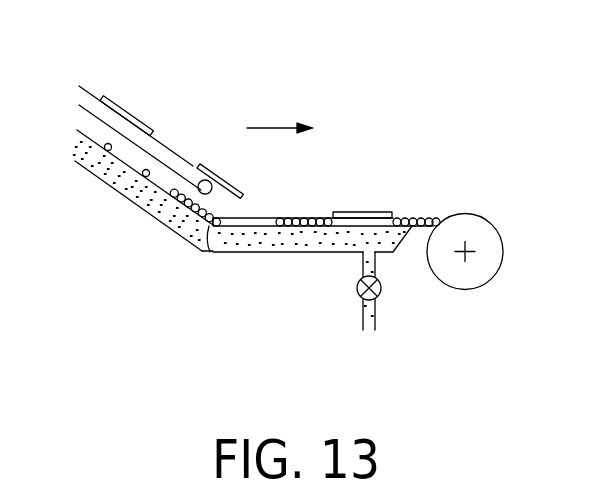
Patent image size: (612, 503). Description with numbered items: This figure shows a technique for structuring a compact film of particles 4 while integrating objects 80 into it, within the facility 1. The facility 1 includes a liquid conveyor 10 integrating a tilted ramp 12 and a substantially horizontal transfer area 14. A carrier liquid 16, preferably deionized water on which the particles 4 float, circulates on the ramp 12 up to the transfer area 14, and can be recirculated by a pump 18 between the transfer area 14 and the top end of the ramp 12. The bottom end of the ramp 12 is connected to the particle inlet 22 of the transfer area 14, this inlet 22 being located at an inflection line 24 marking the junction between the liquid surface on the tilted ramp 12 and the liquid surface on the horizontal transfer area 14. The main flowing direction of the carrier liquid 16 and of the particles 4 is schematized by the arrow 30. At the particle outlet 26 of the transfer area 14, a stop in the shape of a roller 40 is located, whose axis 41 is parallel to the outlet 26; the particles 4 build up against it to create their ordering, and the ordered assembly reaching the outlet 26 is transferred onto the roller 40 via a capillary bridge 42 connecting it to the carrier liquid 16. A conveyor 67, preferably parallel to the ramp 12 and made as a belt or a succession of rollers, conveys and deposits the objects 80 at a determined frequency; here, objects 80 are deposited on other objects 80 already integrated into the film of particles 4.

The facility 1 is at (183, 63).
The particles 4 is at (287, 218).
The liquid conveyor 10 is at (188, 270).
The tilted ramp 12 is at (107, 183).
The transfer area 14 is at (327, 262).
The carrier liquid 16 is at (287, 247).
The pump 18 is at (379, 298).
The particle inlet 22 is at (187, 243).
The inflection line 24 is at (187, 242).
The particle outlet 26 is at (432, 220).
The arrow 30 is at (273, 127).
The roller 40 is at (468, 278).
The axis 41 is at (468, 248).
The capillary bridge 42 is at (436, 220).
The conveyor 67 is at (172, 151).
The objects 80 is at (132, 110).